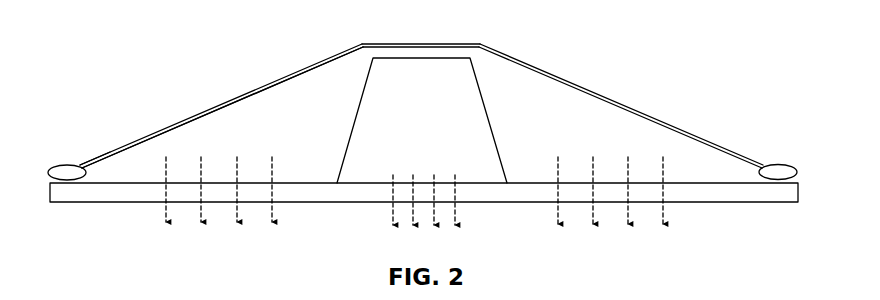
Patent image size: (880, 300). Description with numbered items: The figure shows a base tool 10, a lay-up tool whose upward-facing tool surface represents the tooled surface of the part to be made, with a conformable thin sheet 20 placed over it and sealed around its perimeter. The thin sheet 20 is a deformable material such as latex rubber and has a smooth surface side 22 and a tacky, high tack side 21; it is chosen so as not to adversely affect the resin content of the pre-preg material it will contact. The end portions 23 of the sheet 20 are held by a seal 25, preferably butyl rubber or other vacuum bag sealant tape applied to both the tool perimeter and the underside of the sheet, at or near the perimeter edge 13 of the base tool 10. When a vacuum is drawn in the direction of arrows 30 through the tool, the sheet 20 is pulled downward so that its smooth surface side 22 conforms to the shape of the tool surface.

The base tool 10 is at (437, 131).
The perimeter edge 13 is at (112, 187).
The conformable thin sheet 20 is at (238, 96).
The high tack side 21 is at (311, 65).
The smooth surface side 22 is at (273, 88).
The end portions 23 is at (92, 159).
The seal 25 is at (67, 165).
The arrows 30 is at (200, 216).